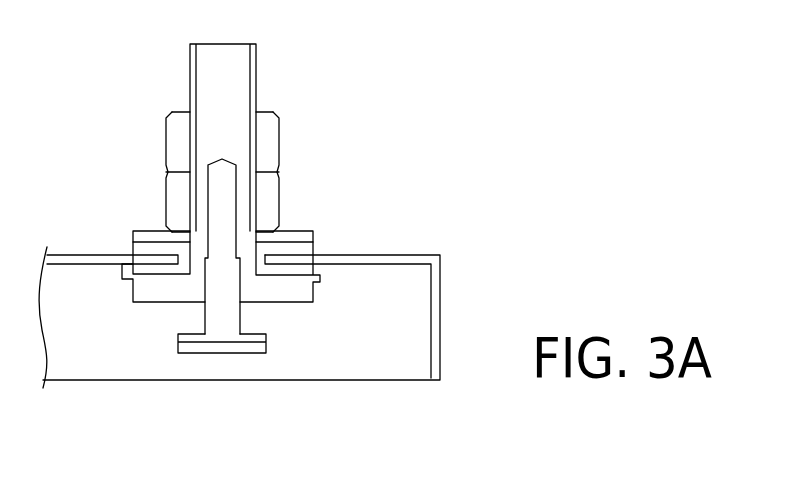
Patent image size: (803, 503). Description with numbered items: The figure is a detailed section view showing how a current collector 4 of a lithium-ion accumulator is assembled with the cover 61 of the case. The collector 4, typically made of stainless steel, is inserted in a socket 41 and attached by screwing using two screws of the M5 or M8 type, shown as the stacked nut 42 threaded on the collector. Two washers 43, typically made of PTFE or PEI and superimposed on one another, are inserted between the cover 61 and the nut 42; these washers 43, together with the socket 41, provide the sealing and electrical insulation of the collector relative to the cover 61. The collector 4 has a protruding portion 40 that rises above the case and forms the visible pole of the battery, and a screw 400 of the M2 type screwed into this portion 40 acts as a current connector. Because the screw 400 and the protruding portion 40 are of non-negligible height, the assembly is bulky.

The current collector 4 is at (478, 148).
The protruding portion 40 is at (238, 90).
The socket 41 is at (172, 275).
The nut 42 is at (272, 203).
The washer 43 is at (165, 237).
The cover 61 is at (435, 322).
The screw 400 is at (222, 347).